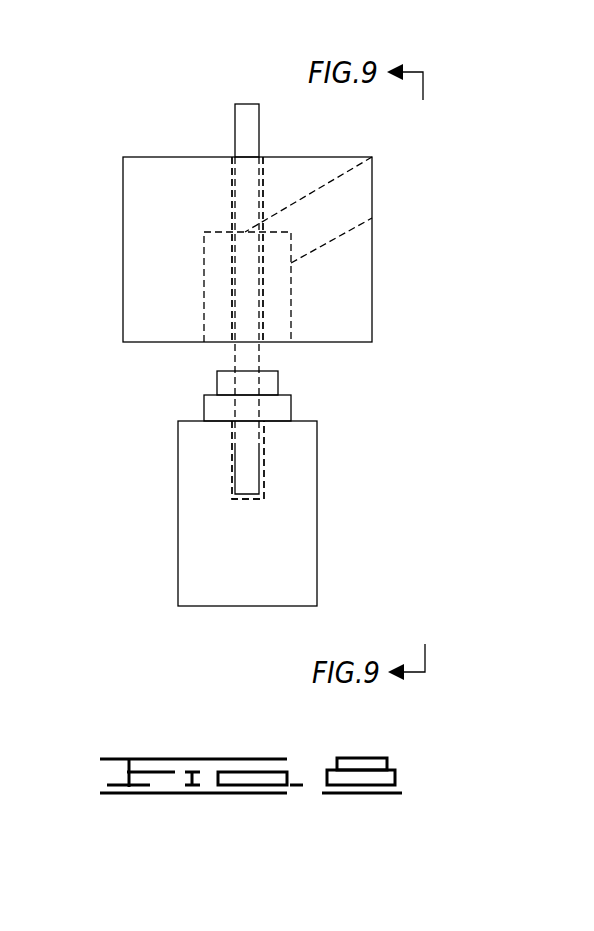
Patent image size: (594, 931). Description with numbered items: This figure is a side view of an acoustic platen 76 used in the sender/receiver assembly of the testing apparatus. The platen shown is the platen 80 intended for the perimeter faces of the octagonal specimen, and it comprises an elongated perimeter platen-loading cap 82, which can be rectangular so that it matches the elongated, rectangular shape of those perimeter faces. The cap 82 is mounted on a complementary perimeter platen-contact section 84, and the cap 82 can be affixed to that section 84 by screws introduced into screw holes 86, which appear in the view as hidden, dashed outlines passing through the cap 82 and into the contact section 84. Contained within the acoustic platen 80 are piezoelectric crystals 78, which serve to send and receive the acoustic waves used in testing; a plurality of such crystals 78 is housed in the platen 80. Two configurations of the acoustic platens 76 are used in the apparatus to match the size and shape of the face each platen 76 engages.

The acoustic platen 76 is at (439, 128).
The piezoelectric crystals 78 is at (278, 382).
The platen 80 is at (232, 347).
The elongated perimeter platen-loading cap 82 is at (372, 295).
The perimeter platen-contact section 84 is at (317, 562).
The screw holes 86 is at (232, 187).